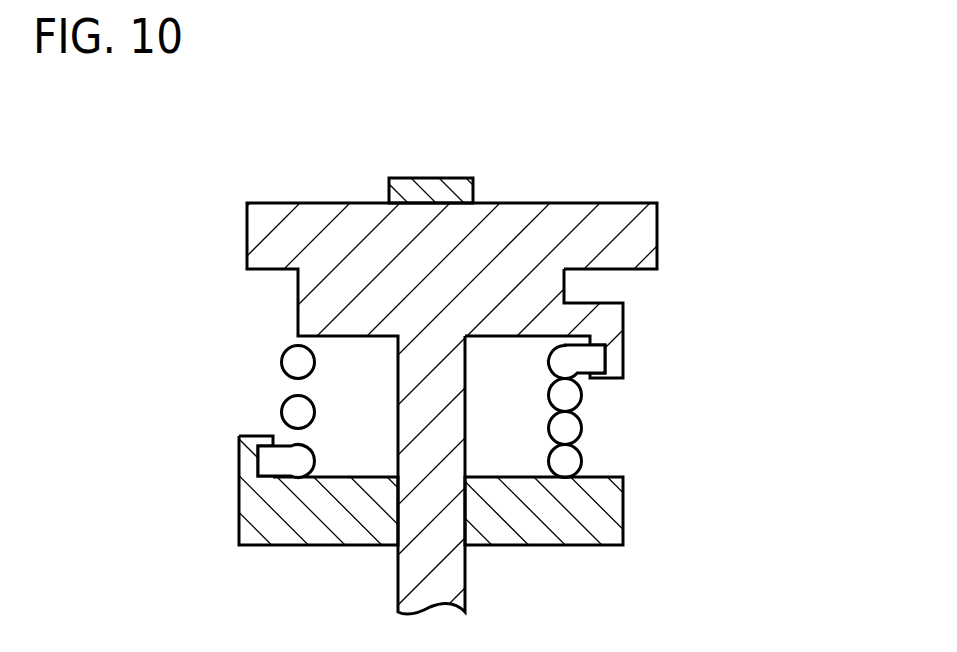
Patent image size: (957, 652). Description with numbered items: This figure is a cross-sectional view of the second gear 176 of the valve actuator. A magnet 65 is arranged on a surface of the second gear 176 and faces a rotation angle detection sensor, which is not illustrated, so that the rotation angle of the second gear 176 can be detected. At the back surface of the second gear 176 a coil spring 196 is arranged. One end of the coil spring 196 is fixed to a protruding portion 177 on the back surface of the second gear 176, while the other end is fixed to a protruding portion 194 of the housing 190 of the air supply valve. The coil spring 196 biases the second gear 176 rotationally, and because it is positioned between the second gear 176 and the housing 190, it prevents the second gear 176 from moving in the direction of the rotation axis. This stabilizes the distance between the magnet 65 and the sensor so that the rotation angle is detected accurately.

The magnet 65 is at (452, 185).
The second gear 176 is at (270, 225).
The protruding portion 177 is at (615, 361).
The housing 190 is at (262, 512).
The protruding portion 194 is at (248, 463).
The coil spring 196 is at (290, 353).